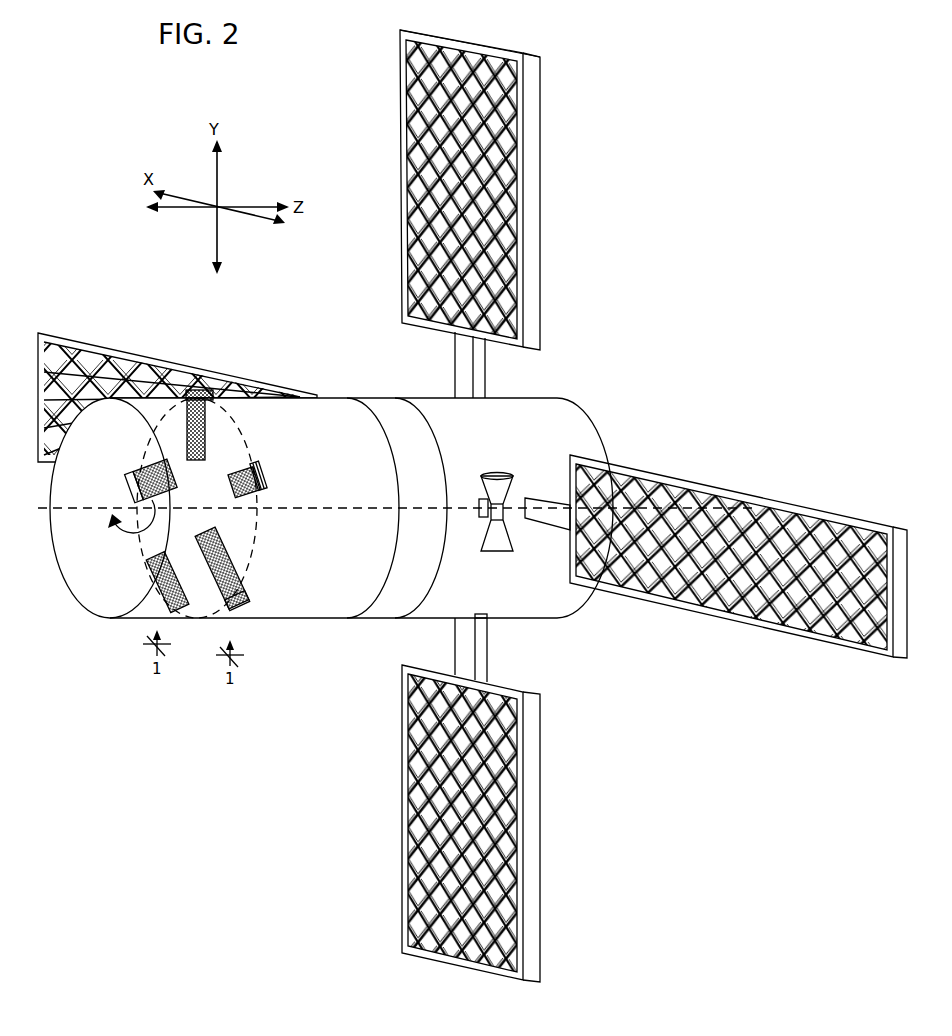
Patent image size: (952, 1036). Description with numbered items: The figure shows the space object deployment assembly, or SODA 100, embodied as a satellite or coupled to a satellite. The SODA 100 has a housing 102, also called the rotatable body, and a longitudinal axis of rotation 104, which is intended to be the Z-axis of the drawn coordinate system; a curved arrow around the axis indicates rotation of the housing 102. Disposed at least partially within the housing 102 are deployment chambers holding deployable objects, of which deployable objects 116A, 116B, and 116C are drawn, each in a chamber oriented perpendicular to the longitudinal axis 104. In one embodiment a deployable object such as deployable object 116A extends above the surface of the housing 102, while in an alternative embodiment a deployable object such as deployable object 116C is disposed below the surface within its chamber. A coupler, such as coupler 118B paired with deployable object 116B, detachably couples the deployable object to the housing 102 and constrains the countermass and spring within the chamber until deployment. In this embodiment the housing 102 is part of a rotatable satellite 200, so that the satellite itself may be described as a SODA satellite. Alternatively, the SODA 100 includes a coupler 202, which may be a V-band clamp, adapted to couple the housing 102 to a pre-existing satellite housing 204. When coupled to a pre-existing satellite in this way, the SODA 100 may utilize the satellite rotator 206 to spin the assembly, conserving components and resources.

The space object deployment assembly (SODA) 100 is at (326, 401).
The housing 102 is at (378, 455).
The longitudinal axis of rotation 104 is at (383, 516).
The deployable object 116A is at (215, 398).
The deployable object 116B is at (262, 476).
The deployable object 116C is at (244, 590).
The coupler 118B is at (258, 492).
The rotatable satellite 200 is at (566, 368).
The coupler 202 is at (382, 612).
The pre-existing satellite housing 204 is at (580, 417).
The satellite rotator 206 is at (507, 486).